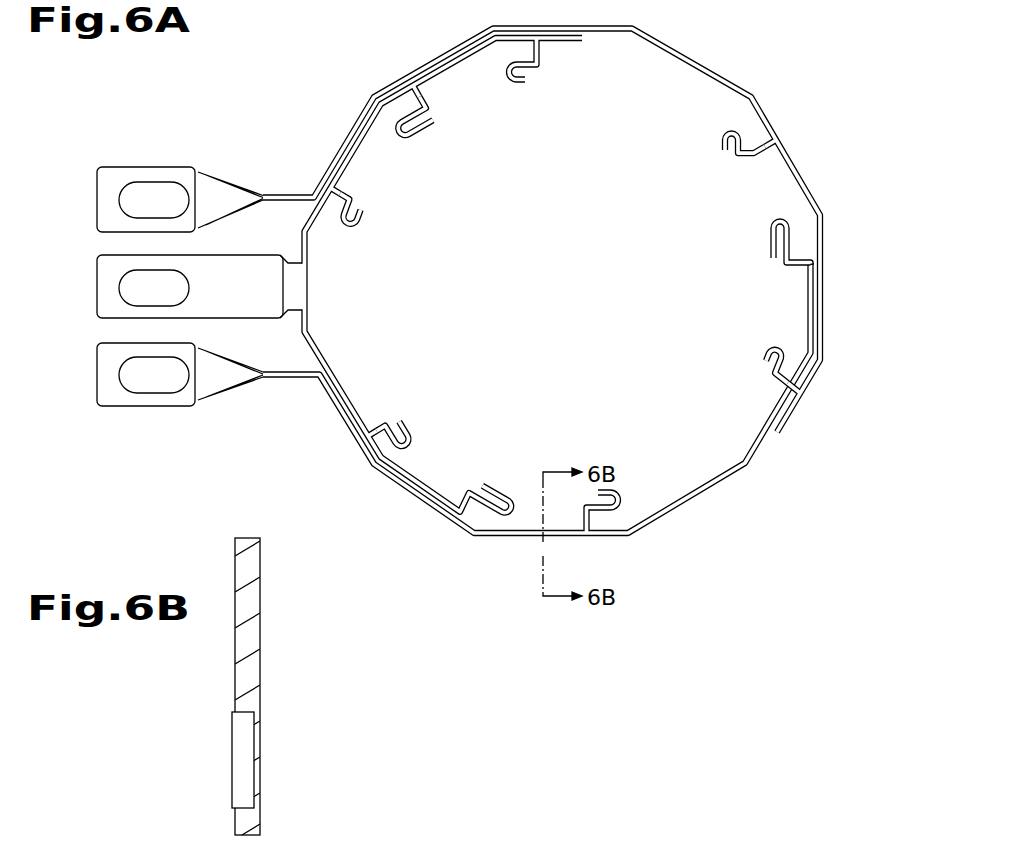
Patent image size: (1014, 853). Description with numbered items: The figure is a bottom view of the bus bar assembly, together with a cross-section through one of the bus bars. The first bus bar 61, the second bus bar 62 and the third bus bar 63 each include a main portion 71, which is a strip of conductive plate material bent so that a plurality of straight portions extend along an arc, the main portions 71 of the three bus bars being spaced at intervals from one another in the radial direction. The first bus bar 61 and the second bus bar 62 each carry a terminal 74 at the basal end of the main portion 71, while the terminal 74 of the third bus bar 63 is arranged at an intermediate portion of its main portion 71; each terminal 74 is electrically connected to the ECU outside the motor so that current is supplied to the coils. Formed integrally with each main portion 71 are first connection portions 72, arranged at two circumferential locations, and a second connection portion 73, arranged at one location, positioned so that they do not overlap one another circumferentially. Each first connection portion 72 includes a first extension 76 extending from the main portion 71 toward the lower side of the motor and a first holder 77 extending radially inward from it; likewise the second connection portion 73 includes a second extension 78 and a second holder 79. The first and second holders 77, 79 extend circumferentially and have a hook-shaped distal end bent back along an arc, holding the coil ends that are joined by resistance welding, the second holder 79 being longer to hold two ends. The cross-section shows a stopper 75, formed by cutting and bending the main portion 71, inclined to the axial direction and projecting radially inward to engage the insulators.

In FIG. 6A, the first bus bar 61 is at (327, 393).
In FIG. 6A, the second bus bar 62 is at (330, 163).
In FIG. 6A, the third bus bar 63 is at (301, 341).
In FIG. 6A, the main portion 71 is at (364, 106).
In FIG. 6B, the main portion 71 is at (254, 629).
In FIG. 6A, the first connection portion 72 is at (577, 286).
In FIG. 6A, the second connection portion 73 is at (571, 180).
In FIG. 6A, the terminal 74 is at (97, 198).
In FIG. 6B, the stopper 75 is at (254, 745).
In FIG. 6A, the first extension 76 is at (568, 43).
In FIG. 6A, the first holder 77 is at (593, 123).
In FIG. 6A, the second extension 78 is at (450, 70).
In FIG. 6A, the second holder 79 is at (490, 179).